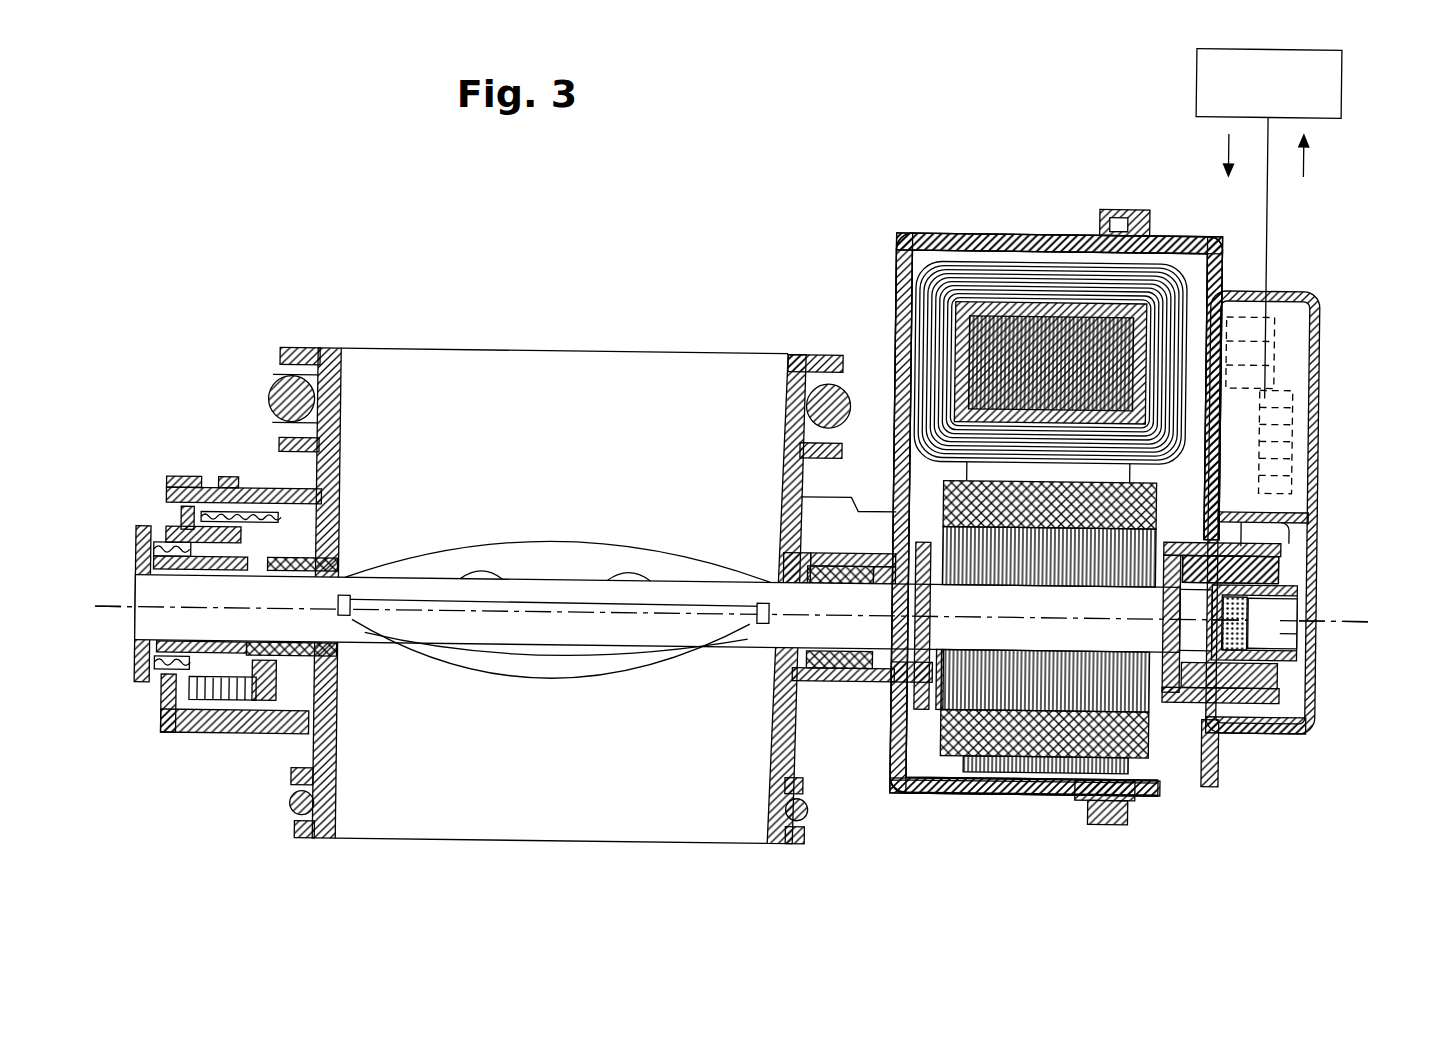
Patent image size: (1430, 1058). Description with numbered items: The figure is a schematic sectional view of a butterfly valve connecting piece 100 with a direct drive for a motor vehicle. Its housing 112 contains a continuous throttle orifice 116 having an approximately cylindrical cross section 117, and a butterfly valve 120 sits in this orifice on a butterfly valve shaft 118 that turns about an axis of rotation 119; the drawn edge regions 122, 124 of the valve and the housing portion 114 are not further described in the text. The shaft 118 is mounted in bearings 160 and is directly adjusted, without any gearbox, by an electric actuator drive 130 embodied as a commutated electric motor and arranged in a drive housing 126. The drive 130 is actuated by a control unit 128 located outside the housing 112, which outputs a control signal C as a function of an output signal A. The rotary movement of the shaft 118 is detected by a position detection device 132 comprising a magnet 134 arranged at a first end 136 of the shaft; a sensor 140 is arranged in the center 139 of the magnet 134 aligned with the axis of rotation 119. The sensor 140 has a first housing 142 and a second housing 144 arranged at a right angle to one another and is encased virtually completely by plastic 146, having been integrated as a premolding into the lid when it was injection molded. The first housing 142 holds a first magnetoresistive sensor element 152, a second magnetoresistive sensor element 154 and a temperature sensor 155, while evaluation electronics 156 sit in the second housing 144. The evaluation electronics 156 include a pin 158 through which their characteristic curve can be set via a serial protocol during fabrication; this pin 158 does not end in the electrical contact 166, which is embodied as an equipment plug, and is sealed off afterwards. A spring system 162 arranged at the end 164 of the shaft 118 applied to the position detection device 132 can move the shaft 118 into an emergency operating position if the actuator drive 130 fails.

The butterfly valve connecting piece 100 is at (393, 247).
The housing 112 is at (324, 353).
The housing wall 114 is at (800, 356).
The throttle orifice 116 is at (770, 785).
The cylindrical cross section 117 is at (587, 375).
The butterfly valve shaft 118 is at (554, 618).
The axis of rotation 119 is at (113, 612).
The butterfly valve 120 is at (505, 670).
The plate edge 122 is at (435, 635).
The plate edge 124 is at (633, 642).
The drive housing 126 is at (988, 231).
The control unit 128 is at (1190, 72).
The electric actuator drive 130 is at (925, 478).
The position detection device 132 is at (1145, 533).
The magnet 134 is at (1172, 640).
The first end of the butterfly valve shaft 136 is at (870, 663).
The center of the magnet 139 is at (1197, 637).
The sensor 140 is at (1285, 542).
The first housing 142 is at (1255, 616).
The second housing 144 is at (1282, 292).
The plastic 146 is at (1290, 740).
The first magnetoresistive sensor element 152 is at (1226, 728).
The second magnetoresistive sensor element 154 is at (1236, 590).
The temperature sensor 155 is at (1260, 577).
The evaluation electronics 156 is at (1310, 686).
The pin 158 is at (1243, 325).
The bearings 160 is at (293, 683).
The spring system 162 is at (215, 494).
The end of the butterfly valve shaft 164 is at (180, 739).
The electrical contact 166 is at (1270, 376).